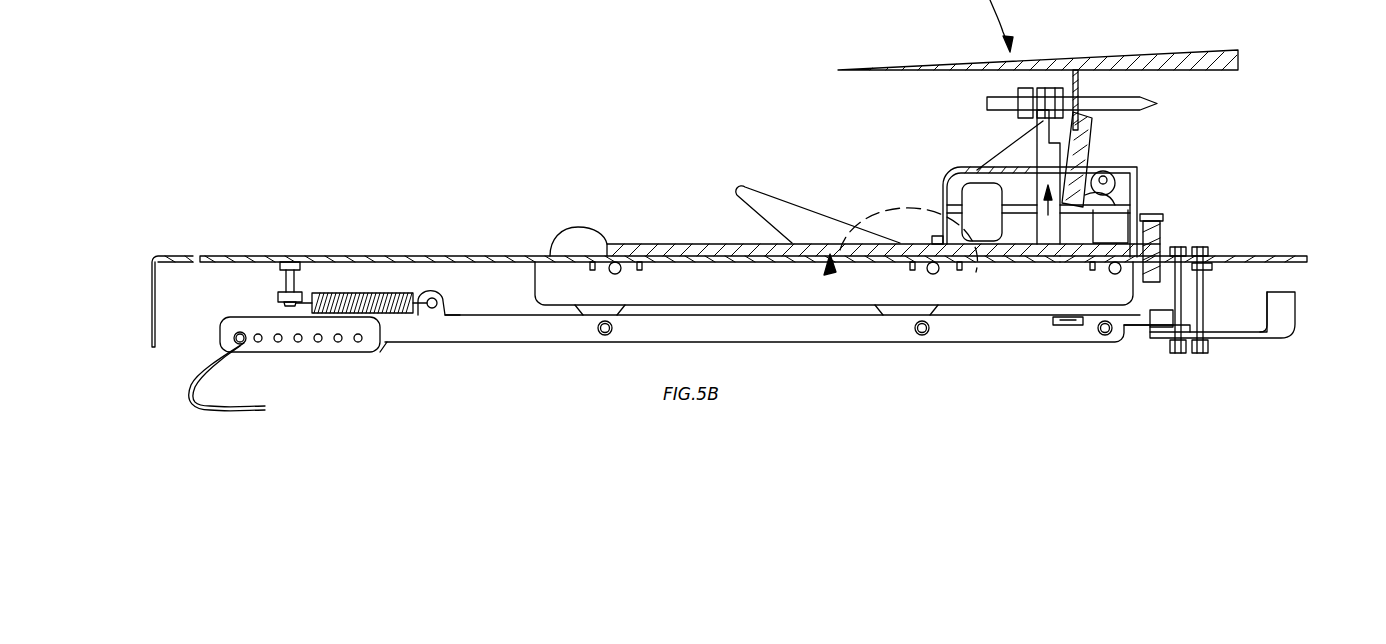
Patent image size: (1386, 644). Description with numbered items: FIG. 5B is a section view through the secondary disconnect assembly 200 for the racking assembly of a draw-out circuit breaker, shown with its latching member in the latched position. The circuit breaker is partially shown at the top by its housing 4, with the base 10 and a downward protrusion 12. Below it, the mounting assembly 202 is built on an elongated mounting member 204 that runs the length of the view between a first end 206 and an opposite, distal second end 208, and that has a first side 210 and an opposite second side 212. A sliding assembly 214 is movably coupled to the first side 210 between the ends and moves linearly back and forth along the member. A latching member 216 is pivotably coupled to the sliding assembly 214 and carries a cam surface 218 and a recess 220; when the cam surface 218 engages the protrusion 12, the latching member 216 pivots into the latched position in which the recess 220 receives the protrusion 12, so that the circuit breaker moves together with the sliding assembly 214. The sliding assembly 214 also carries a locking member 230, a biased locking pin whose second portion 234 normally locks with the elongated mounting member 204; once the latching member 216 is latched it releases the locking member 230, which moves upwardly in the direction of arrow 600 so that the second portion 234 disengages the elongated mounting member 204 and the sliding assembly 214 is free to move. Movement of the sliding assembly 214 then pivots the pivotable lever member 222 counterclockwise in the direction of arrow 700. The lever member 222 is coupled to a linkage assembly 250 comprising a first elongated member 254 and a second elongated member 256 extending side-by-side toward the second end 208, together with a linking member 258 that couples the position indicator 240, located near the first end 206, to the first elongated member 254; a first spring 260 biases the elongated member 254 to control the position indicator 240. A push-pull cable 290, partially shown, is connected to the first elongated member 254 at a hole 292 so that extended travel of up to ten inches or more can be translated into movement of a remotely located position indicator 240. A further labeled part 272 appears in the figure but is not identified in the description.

The housing 4 is at (1150, 58).
The base 10 is at (1238, 71).
The protrusion 12 is at (1079, 84).
The secondary disconnect assembly 200 is at (980, 377).
The mounting assembly 202 is at (472, 212).
The elongated mounting member 204 is at (337, 255).
The first end 206 is at (1299, 252).
The second end 208 is at (165, 251).
The first side 210 is at (510, 256).
The second side 212 is at (525, 265).
The sliding assembly 214 is at (951, 164).
The latching member 216 is at (1040, 128).
The cam surface 218 is at (1088, 98).
The recess 220 is at (1095, 128).
The pivotable lever member 222 is at (763, 188).
The locking member 230 is at (1110, 206).
The second portion 234 is at (1063, 262).
The position indicator 240 is at (1297, 340).
The linkage assembly 250 is at (594, 347).
The first elongated member 254 is at (786, 330).
The second elongated member 256 is at (698, 287).
The linking member 258 is at (1140, 337).
The first spring 260 is at (393, 318).
The guide tab 272 is at (1072, 317).
The push-pull cable 290 is at (194, 378).
The hole 292 is at (237, 335).
The arrow 600 is at (1030, 216).
The arrow 700 is at (897, 205).